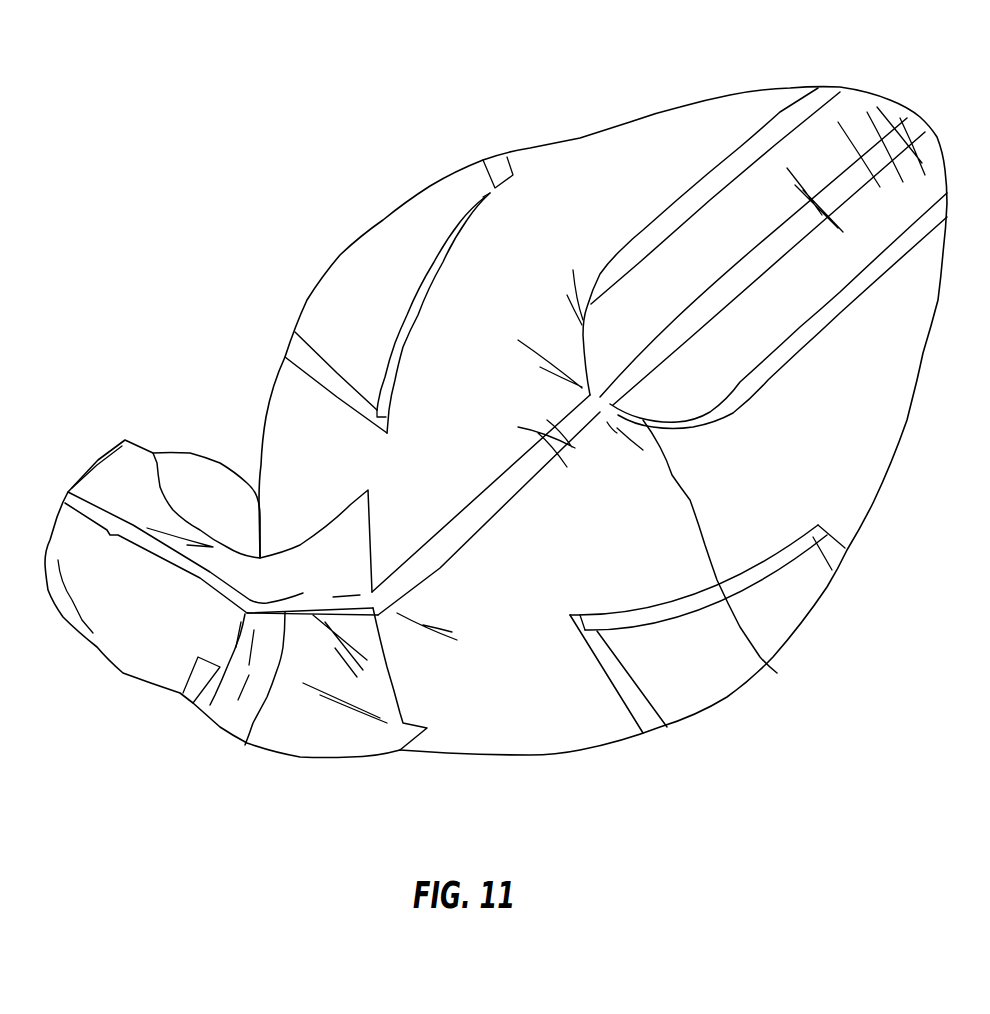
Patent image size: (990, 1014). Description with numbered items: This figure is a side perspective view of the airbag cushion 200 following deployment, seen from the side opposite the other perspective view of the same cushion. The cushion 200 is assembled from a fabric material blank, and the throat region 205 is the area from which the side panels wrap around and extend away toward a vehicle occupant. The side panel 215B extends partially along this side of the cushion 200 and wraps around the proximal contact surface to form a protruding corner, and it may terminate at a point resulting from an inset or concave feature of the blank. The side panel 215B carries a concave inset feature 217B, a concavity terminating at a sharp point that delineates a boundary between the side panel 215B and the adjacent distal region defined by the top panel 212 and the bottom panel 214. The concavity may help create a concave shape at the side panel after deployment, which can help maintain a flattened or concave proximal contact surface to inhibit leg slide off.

The airbag cushion 200 is at (496, 392).
The throat region 205 is at (110, 682).
The top panel 212 is at (843, 495).
The bottom panel 214 is at (372, 238).
The side panel 215B is at (800, 165).
The concave inset feature 217B is at (777, 673).